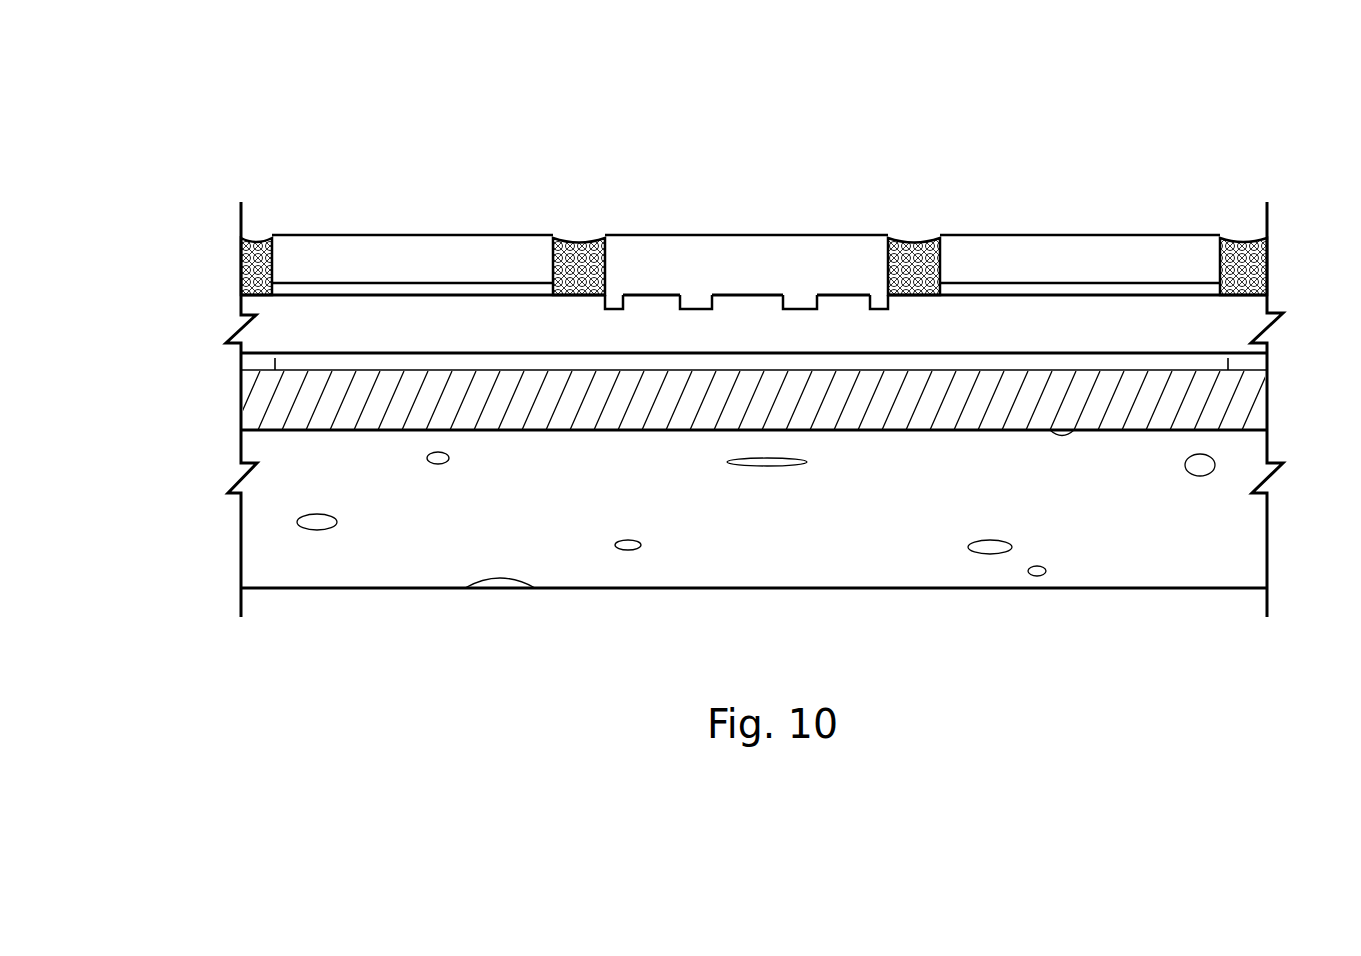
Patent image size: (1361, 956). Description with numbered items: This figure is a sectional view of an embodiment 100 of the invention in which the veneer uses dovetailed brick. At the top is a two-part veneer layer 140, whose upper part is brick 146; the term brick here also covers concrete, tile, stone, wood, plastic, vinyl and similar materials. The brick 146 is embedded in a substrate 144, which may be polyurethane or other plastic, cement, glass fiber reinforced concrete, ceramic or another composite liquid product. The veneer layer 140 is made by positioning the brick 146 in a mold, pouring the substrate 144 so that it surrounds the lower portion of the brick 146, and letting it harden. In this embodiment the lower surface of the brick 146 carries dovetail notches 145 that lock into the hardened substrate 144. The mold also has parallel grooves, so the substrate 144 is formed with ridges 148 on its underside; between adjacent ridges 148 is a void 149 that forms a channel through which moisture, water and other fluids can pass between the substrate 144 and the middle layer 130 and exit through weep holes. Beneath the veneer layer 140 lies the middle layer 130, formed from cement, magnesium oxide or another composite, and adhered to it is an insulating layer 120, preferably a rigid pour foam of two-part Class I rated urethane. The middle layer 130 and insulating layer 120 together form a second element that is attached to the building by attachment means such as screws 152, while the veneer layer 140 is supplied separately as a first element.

The embodiment 100 is at (460, 153).
The insulating layer 120 is at (267, 557).
The middle layer 130 is at (270, 412).
The two-part veneer layer 140 is at (200, 300).
The substrate 144 is at (1245, 316).
The dovetail notches 145 is at (801, 302).
The brick 146 is at (510, 250).
The ridges 148 is at (245, 362).
The void 149 is at (330, 360).
The screws 152 is at (258, 237).